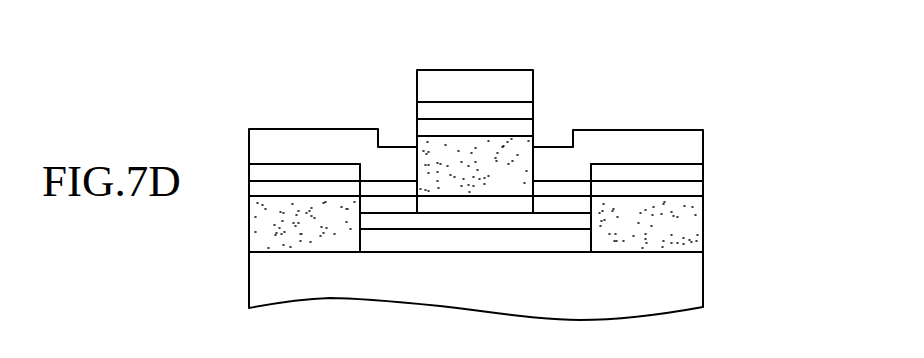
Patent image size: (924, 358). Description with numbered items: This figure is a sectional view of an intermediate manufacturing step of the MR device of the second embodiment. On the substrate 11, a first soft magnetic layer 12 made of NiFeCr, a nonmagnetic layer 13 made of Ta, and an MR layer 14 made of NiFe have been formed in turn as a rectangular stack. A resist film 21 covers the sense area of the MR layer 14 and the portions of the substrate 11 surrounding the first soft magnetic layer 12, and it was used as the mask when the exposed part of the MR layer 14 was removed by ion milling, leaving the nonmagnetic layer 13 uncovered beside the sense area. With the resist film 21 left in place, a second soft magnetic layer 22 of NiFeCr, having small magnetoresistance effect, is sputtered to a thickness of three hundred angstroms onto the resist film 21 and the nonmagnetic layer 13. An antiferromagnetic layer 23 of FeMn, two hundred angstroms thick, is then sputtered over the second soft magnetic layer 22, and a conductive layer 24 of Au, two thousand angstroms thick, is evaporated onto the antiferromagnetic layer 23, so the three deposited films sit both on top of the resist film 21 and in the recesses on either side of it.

The substrate 11 is at (682, 295).
The first soft magnetic layer 12 is at (398, 240).
The nonmagnetic layer 13 is at (547, 220).
The MR layer 14 is at (460, 205).
The resist film 21 is at (680, 237).
The second soft magnetic layer 22 is at (527, 129).
The antiferromagnetic layer 23 is at (417, 110).
The conductive layer 24 is at (468, 82).